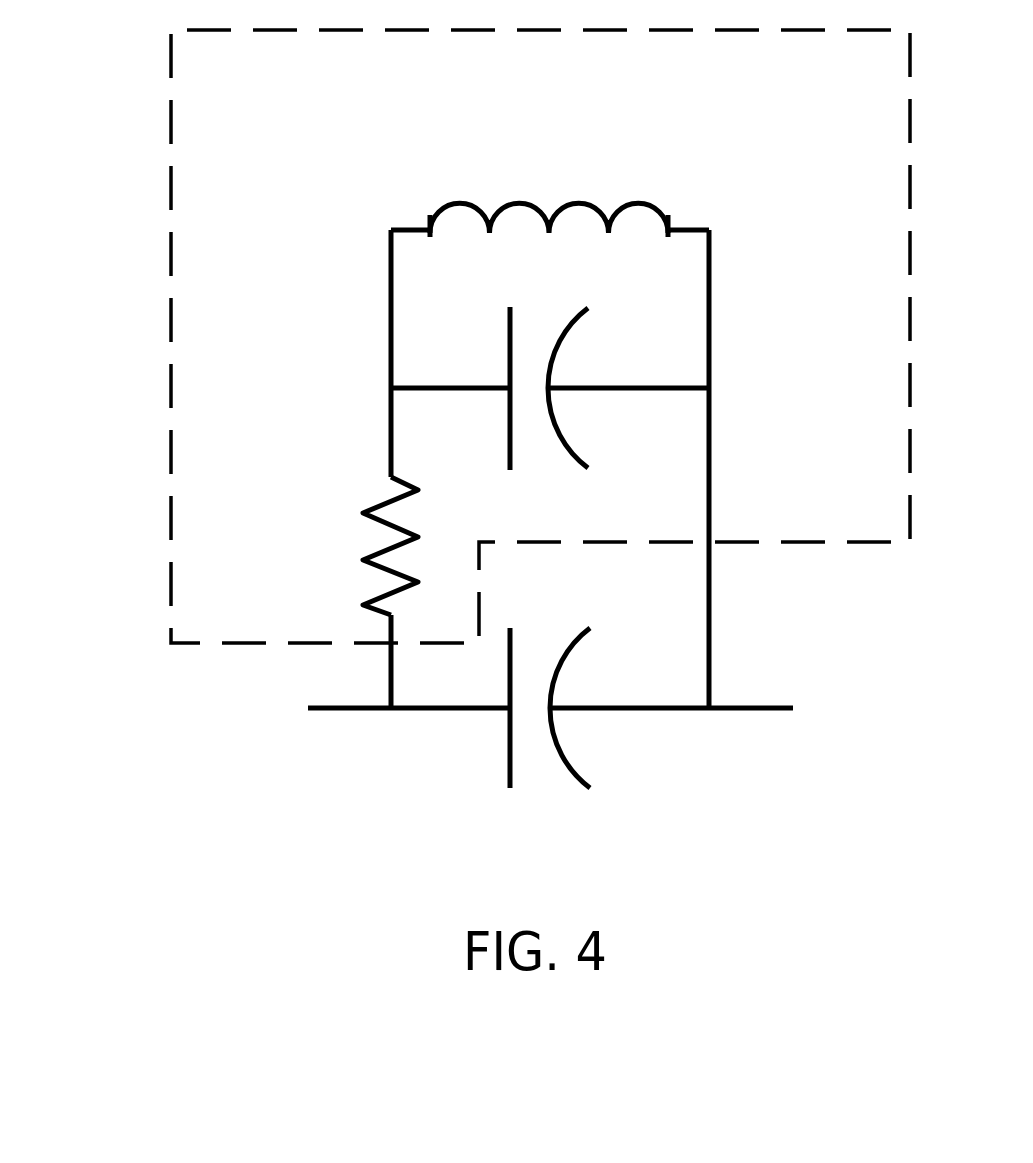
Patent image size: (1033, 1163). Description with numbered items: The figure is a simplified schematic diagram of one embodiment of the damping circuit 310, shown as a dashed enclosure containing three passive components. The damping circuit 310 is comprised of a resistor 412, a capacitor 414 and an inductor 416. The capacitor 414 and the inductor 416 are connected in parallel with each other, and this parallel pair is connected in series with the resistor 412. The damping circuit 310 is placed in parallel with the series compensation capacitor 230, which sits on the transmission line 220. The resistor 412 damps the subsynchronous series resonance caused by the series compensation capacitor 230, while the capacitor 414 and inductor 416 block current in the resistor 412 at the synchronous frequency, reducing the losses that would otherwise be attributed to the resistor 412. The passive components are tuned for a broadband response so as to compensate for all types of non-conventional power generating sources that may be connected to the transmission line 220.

The damping circuit 310 is at (162, 625).
The inductor 416 is at (560, 198).
The capacitor 414 is at (580, 348).
The resistor 412 is at (355, 552).
The transmission line 220 is at (767, 710).
The series compensation capacitor 230 is at (490, 763).